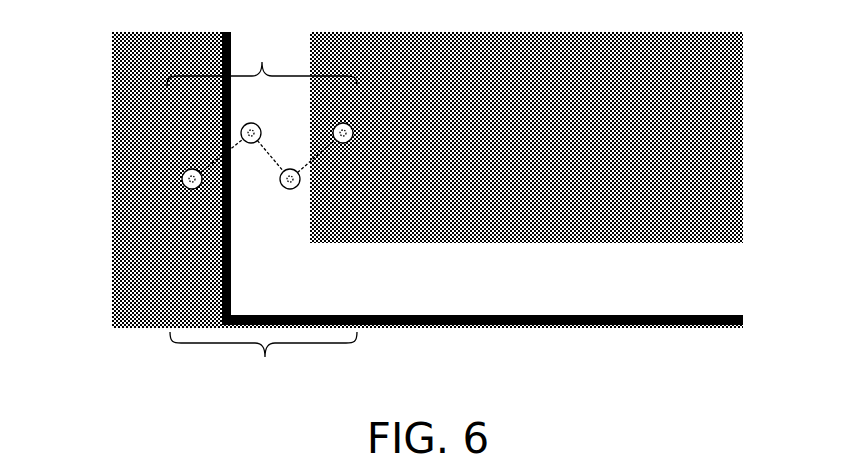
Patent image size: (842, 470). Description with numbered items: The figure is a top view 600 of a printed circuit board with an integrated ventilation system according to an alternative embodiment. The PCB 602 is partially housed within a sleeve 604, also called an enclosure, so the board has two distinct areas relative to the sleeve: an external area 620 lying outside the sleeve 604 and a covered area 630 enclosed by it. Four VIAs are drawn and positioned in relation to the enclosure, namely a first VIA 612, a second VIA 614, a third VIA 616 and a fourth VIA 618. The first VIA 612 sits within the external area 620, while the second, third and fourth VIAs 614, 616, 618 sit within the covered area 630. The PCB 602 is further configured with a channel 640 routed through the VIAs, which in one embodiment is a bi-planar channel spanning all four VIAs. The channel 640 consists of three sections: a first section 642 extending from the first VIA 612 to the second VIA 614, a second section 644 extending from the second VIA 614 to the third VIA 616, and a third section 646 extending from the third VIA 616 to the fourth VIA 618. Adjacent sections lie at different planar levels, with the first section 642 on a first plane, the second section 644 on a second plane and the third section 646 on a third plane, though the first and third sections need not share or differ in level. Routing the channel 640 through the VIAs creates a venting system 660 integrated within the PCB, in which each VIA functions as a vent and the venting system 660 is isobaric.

The top view 600 is at (405, 211).
The PCB 602 is at (121, 247).
The sleeve 604 is at (730, 176).
The first VIA 612 is at (190, 190).
The second VIA 614 is at (250, 145).
The third VIA 616 is at (290, 190).
The fourth VIA 618 is at (343, 145).
The external area 620 is at (131, 147).
The covered area 630 is at (730, 253).
The channel 640 is at (262, 61).
The first section 642 is at (208, 160).
The second section 644 is at (268, 152).
The third section 646 is at (318, 152).
The venting system 660 is at (263, 357).